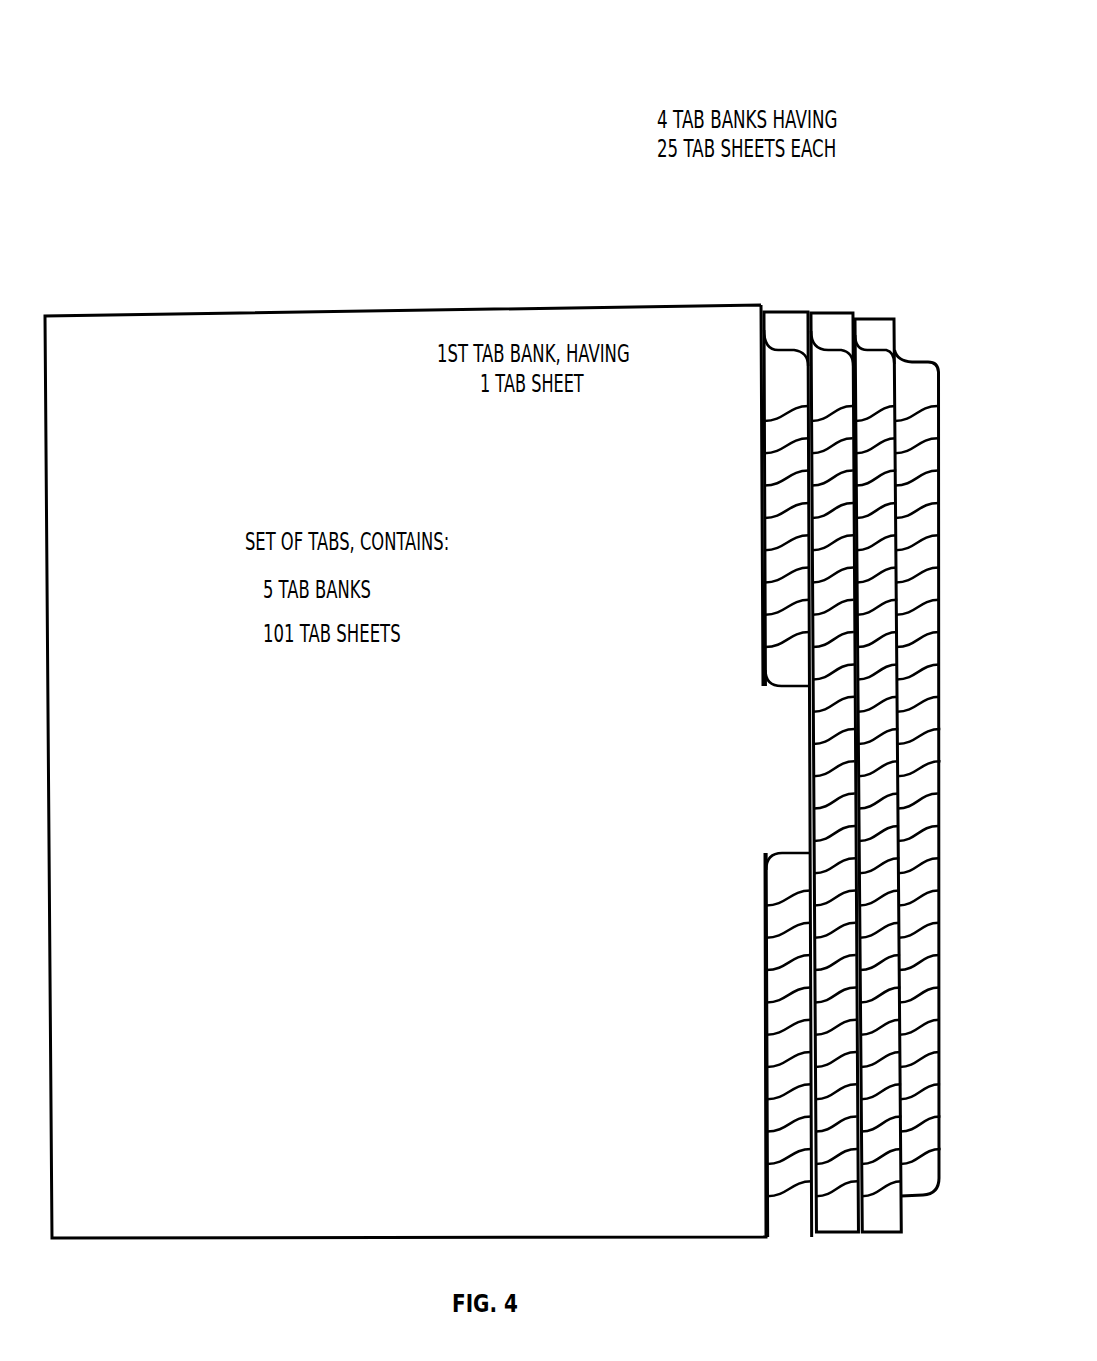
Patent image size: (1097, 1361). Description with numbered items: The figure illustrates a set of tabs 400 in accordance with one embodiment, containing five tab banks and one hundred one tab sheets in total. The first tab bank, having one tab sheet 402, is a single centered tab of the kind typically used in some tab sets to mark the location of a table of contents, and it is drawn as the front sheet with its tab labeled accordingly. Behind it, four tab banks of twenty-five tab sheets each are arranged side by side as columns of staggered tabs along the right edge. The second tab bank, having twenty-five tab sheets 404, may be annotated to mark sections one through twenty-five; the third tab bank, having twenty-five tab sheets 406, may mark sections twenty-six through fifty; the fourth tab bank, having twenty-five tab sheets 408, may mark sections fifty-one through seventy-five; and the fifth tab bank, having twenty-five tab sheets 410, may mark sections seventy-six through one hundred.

The set of tabs 400 is at (880, 58).
The 1st tab bank having 1 tab sheet 402 is at (780, 680).
The 2nd tab bank having 25 tab sheets 404 is at (786, 351).
The 3rd tab bank having 25 tab sheets 406 is at (833, 353).
The 4th tab bank having 25 tab sheets 408 is at (878, 352).
The 5th tab bank having 25 tab sheets 410 is at (918, 361).